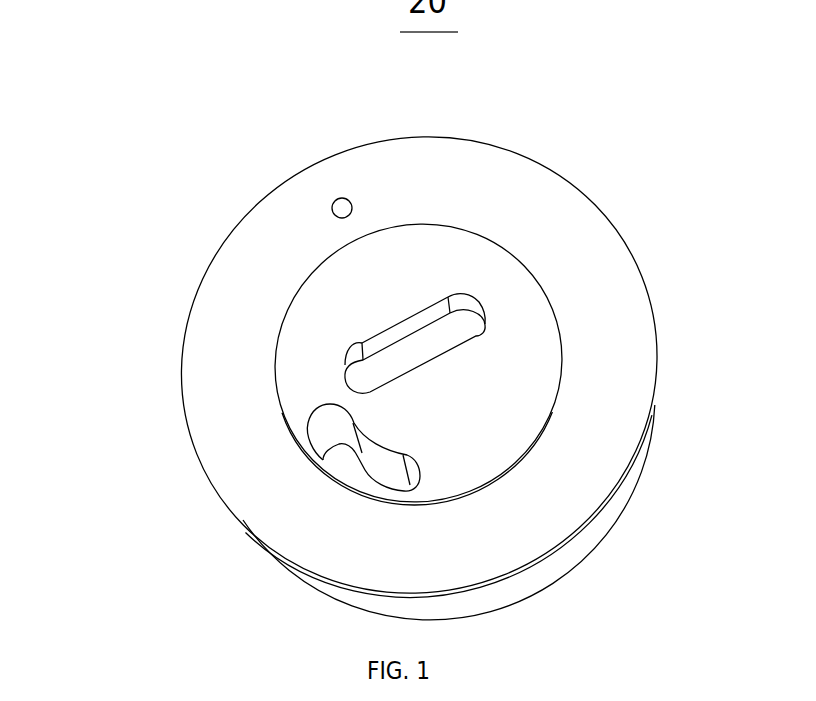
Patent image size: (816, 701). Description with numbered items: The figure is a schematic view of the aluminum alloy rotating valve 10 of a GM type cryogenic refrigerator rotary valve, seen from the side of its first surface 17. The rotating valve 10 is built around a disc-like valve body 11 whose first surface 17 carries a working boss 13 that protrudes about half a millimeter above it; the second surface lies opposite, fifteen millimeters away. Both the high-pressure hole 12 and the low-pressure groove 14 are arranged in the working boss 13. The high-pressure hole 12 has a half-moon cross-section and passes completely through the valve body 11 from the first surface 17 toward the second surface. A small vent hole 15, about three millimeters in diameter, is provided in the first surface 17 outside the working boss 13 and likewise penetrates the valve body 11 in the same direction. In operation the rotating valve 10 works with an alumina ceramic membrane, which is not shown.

The aluminum alloy rotating valve 10 is at (152, 294).
The valve body 11 is at (545, 166).
The high-pressure hole 12 is at (343, 458).
The working boss 13 is at (523, 385).
The low-pressure groove 14 is at (385, 368).
The vent hole 15 is at (340, 208).
The first surface 17 is at (600, 270).